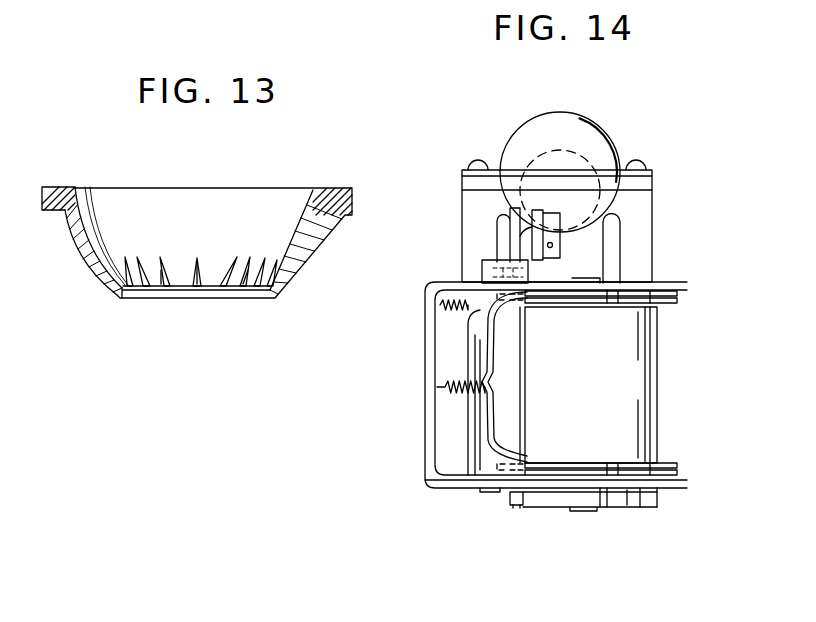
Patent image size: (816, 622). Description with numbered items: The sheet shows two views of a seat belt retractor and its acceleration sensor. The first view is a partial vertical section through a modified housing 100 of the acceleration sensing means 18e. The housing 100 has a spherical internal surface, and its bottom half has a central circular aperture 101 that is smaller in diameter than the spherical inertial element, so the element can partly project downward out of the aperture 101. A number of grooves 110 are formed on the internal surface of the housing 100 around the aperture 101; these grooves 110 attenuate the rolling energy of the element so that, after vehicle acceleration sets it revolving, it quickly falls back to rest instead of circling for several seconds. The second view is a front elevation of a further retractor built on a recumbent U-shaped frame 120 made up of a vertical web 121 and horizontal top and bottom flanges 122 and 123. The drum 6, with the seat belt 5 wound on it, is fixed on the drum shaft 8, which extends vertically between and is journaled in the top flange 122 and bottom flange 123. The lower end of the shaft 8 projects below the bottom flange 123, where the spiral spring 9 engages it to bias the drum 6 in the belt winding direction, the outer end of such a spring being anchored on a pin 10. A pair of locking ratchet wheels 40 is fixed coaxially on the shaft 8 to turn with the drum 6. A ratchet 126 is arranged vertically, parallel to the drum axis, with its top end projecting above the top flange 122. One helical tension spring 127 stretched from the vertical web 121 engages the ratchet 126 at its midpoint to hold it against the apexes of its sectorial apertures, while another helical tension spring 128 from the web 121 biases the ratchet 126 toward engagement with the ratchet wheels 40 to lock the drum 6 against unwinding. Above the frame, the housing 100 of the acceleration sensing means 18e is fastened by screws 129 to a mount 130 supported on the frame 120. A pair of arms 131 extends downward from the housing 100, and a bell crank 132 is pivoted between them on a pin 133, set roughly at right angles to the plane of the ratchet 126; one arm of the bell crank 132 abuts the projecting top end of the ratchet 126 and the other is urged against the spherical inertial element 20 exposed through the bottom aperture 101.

In FIG. 13, the acceleration sensing means 18e is at (69, 184).
In FIG. 14, the acceleration sensing means 18e is at (522, 127).
In FIG. 13, the housing 100 is at (331, 197).
In FIG. 14, the housing 100 is at (583, 117).
In FIG. 13, the circular aperture 101 is at (270, 298).
In FIG. 13, the grooves 110 is at (198, 260).
In FIG. 14, the screws 129 is at (636, 160).
In FIG. 14, the mount 130 is at (655, 200).
In FIG. 14, the arms 131 is at (532, 212).
In FIG. 14, the bell crank 132 is at (523, 244).
In FIG. 14, the pin 133 is at (557, 247).
In FIG. 14, the spherical inertial element 20 is at (562, 236).
In FIG. 14, the top flange 122 is at (450, 282).
In FIG. 14, the U-shaped frame 120 is at (418, 296).
In FIG. 14, the vertical web 121 is at (428, 370).
In FIG. 14, the bottom flange 123 is at (450, 487).
In FIG. 14, the helical tension spring 128 is at (450, 308).
In FIG. 14, the helical tension spring 127 is at (450, 397).
In FIG. 14, the ratchet 126 is at (480, 338).
In FIG. 14, the locking ratchet wheels 40 is at (668, 300).
In FIG. 14, the seat belt 5 is at (645, 388).
In FIG. 14, the pin 10 is at (517, 507).
In FIG. 14, the drum shaft 8 is at (587, 509).
In FIG. 14, the drum 6 is at (603, 477).
In FIG. 14, the spiral spring 9 is at (645, 500).